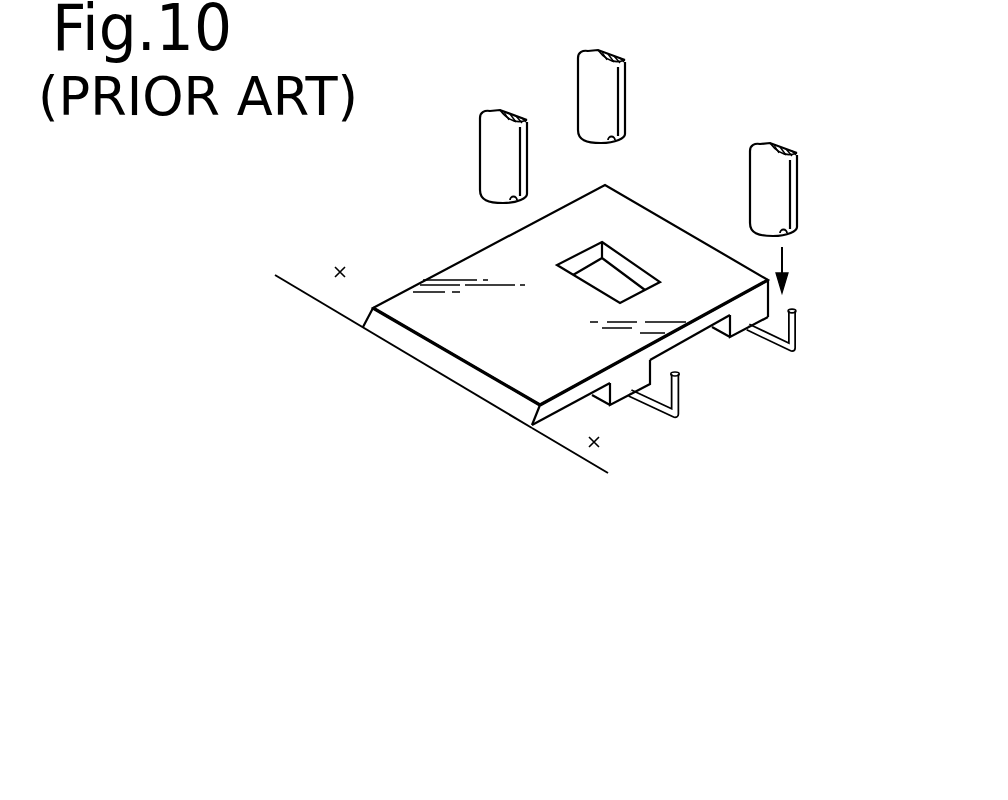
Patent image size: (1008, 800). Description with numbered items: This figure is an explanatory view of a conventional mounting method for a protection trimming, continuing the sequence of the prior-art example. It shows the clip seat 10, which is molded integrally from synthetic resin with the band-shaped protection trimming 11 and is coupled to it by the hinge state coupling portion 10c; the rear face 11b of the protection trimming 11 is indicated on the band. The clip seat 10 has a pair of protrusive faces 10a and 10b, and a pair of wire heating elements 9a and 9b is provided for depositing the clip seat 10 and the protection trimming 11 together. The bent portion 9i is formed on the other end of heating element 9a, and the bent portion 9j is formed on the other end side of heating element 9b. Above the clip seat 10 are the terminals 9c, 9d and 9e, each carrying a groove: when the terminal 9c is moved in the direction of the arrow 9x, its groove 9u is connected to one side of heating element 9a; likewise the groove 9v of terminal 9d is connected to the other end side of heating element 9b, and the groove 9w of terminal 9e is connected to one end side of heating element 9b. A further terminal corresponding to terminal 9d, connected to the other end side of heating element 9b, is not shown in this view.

The wire heating element 9a is at (782, 358).
The wire heating element 9b is at (655, 406).
The terminal 9c is at (620, 73).
The terminal 9d is at (787, 172).
The terminal 9e is at (485, 137).
The bent portion 9i is at (796, 332).
The bent portion 9j is at (684, 398).
The groove 9u is at (612, 141).
The groove 9v is at (781, 233).
The groove 9w is at (510, 203).
The arrow 9x is at (783, 258).
The clip seat 10 is at (493, 352).
The protrusive face 10a is at (742, 339).
The protrusive face 10b is at (622, 403).
The hinge state coupling portion 10c is at (397, 347).
The protection trimming 11 is at (340, 268).
The rear face 11b is at (590, 441).